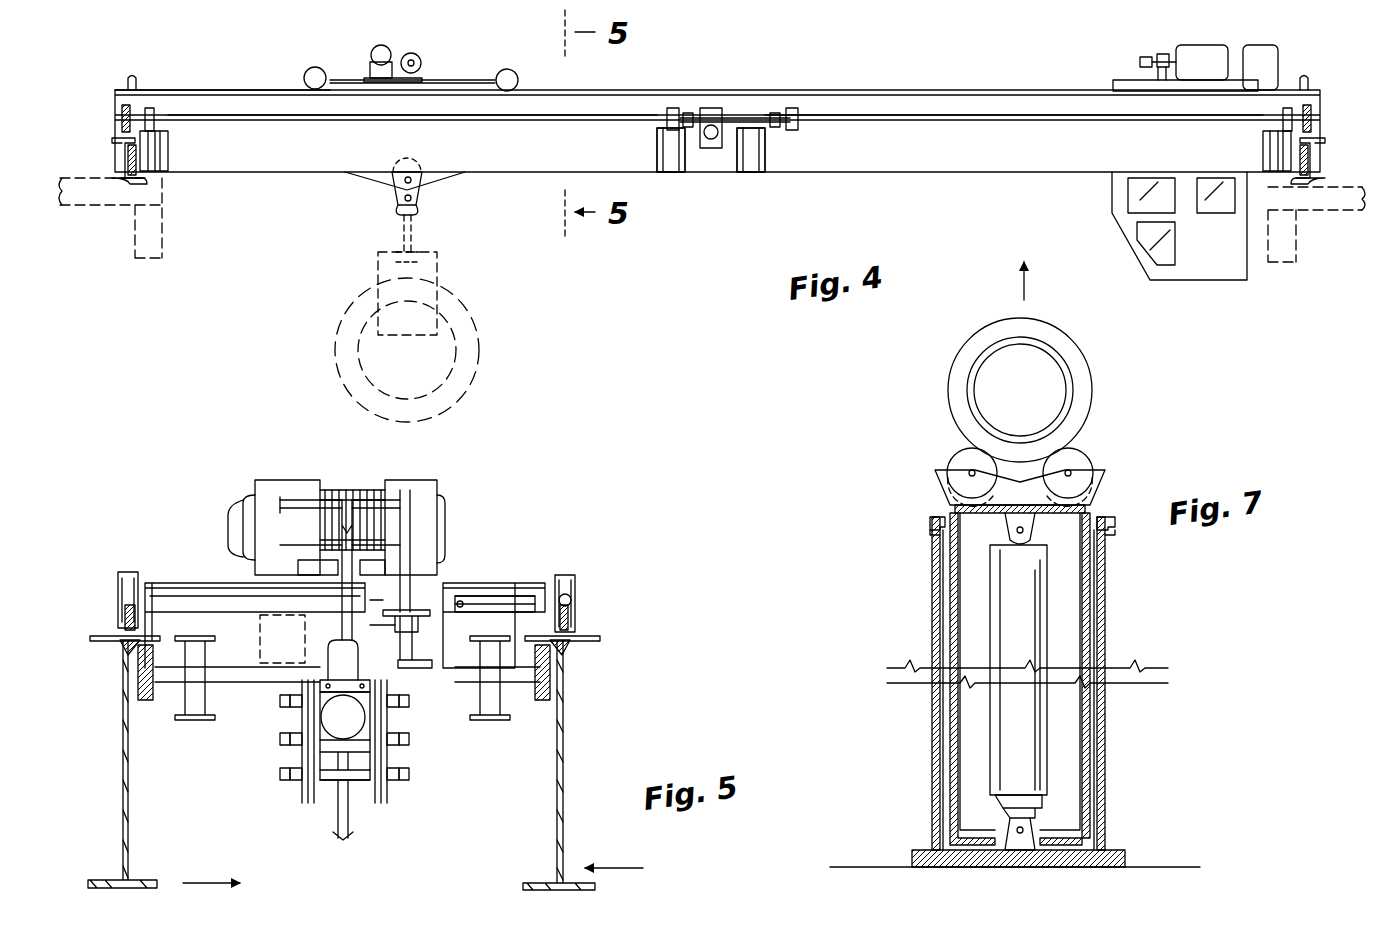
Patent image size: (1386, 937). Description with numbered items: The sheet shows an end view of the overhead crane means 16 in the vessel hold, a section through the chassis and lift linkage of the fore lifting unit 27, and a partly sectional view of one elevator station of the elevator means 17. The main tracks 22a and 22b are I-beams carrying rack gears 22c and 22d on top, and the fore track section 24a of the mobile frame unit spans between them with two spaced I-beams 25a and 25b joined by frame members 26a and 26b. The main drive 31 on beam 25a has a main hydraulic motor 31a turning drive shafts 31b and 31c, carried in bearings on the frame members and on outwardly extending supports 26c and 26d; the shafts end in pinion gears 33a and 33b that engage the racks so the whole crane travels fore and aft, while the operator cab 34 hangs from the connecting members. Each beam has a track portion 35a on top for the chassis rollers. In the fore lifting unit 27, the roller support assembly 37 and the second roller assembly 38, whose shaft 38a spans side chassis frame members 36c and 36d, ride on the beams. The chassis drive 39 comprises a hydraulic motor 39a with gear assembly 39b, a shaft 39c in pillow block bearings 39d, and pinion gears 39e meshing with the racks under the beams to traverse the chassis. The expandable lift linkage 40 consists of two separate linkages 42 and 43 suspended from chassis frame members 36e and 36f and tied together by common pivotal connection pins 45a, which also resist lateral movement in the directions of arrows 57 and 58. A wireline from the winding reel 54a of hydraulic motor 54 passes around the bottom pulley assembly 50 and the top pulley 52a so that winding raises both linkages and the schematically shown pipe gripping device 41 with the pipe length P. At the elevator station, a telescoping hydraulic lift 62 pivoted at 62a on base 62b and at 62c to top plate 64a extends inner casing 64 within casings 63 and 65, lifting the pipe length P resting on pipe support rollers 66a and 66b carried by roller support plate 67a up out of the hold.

In FIG. 4, the overhead crane means 16 is at (1300, 68).
In FIG. 7, the elevator means 17 is at (912, 462).
In FIG. 4, the main track 22a is at (120, 146).
In FIG. 4, the main track 22b is at (1316, 145).
In FIG. 4, the rack gear 22c is at (118, 132).
In FIG. 4, the rack gear 22d is at (1306, 133).
In FIG. 5, the fore track section 24a is at (605, 636).
In FIG. 4, the fore track beam 25a is at (840, 95).
In FIG. 5, the fore track beam 25a is at (563, 732).
In FIG. 5, the fore track beam 25b is at (120, 733).
In FIG. 4, the frame member 26a is at (170, 142).
In FIG. 4, the frame member 26b is at (1263, 146).
In FIG. 4, the support 26c is at (657, 153).
In FIG. 4, the support 26d is at (766, 149).
In FIG. 4, the fore lifting unit 27 is at (432, 55).
In FIG. 5, the fore lifting unit 27 is at (455, 492).
In FIG. 4, the main drive 31 is at (735, 182).
In FIG. 4, the main hydraulic motor 31a is at (711, 148).
In FIG. 4, the drive shaft 31b is at (508, 125).
In FIG. 4, the drive shaft 31c is at (908, 123).
In FIG. 4, the pinion gear 33a is at (1310, 105).
In FIG. 4, the pinion gear 33b is at (118, 110).
In FIG. 4, the operator cab 34 is at (1217, 260).
In FIG. 4, the track portion 35a is at (233, 89).
In FIG. 5, the chassis frame member 36c is at (152, 588).
In FIG. 5, the chassis frame member 36d is at (533, 583).
In FIG. 5, the chassis frame member 36e is at (275, 627).
In FIG. 5, the chassis frame member 36f is at (415, 612).
In FIG. 4, the roller support assembly 37 is at (312, 75).
In FIG. 4, the second roller assembly 38 is at (510, 68).
In FIG. 5, the second roller assembly 38 is at (575, 576).
In FIG. 5, the shaft 38a is at (480, 600).
In FIG. 5, the chassis drive 39 is at (400, 690).
In FIG. 5, the hydraulic motor 39a is at (358, 712).
In FIG. 5, the gear assembly 39b is at (340, 648).
In FIG. 5, the shaft 39c is at (532, 665).
In FIG. 5, the pillow block bearings 39d is at (178, 714).
In FIG. 5, the pinion gear 39e is at (550, 668).
In FIG. 5, the expandable lift linkage 40 is at (290, 725).
In FIG. 4, the pipe gripping device 41 is at (437, 262).
In FIG. 5, the separate linkage 42 is at (290, 749).
In FIG. 5, the separate linkage 43 is at (387, 795).
In FIG. 5, the pivotal connection pins 45a is at (328, 787).
In FIG. 4, the bottom pulley assembly 50 is at (420, 185).
In FIG. 5, the sheave or pulley 52a is at (352, 537).
In FIG. 5, the hydraulic motor 54 is at (270, 480).
In FIG. 5, the winding reel 54a is at (360, 480).
In FIG. 5, the arrow 57 is at (620, 868).
In FIG. 5, the arrow 58 is at (208, 883).
In FIG. 7, the telescoping hydraulic lift 62 is at (1037, 599).
In FIG. 7, the pivotal mounting 62a is at (1025, 828).
In FIG. 7, the base 62b is at (1125, 864).
In FIG. 7, the pivotal attachment 62c is at (1030, 530).
In FIG. 7, the cylindrical casing 63 is at (928, 518).
In FIG. 7, the cylindrical casing 64 is at (950, 568).
In FIG. 7, the top plate 64a is at (1082, 505).
In FIG. 7, the outer cylindrical casing 65 is at (931, 605).
In FIG. 7, the pipe support roller 66a is at (1078, 448).
In FIG. 7, the pipe support roller 66b is at (962, 451).
In FIG. 7, the roller support plate 67a is at (1085, 468).
In FIG. 4, the pipe length P is at (479, 330).
In FIG. 7, the pipe length P is at (1085, 381).